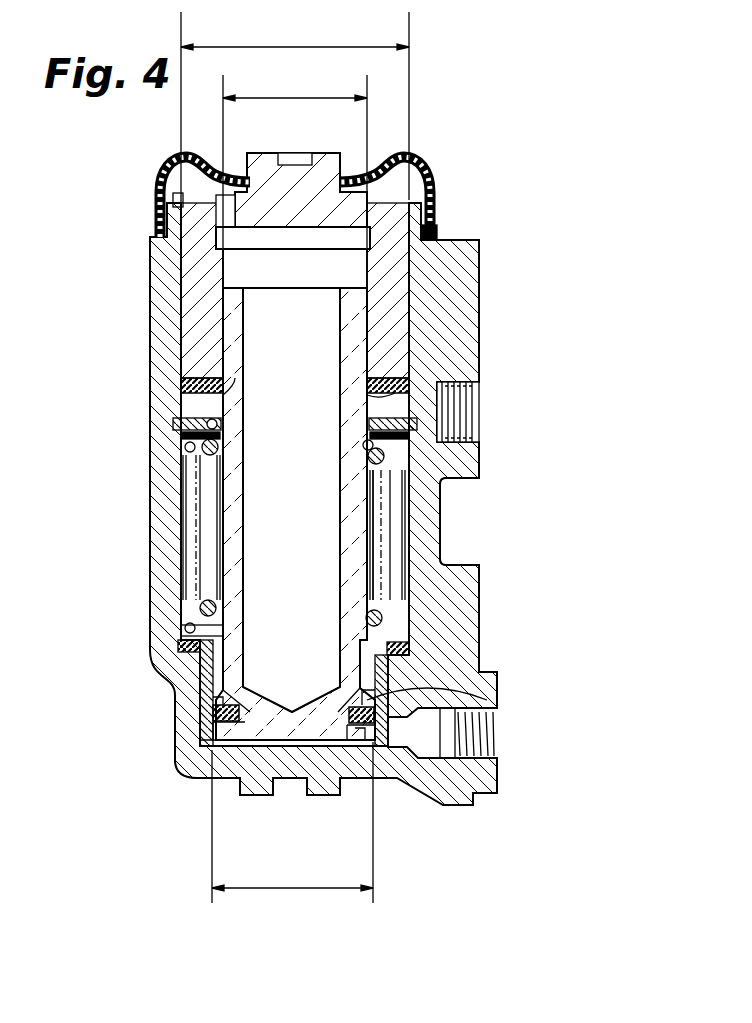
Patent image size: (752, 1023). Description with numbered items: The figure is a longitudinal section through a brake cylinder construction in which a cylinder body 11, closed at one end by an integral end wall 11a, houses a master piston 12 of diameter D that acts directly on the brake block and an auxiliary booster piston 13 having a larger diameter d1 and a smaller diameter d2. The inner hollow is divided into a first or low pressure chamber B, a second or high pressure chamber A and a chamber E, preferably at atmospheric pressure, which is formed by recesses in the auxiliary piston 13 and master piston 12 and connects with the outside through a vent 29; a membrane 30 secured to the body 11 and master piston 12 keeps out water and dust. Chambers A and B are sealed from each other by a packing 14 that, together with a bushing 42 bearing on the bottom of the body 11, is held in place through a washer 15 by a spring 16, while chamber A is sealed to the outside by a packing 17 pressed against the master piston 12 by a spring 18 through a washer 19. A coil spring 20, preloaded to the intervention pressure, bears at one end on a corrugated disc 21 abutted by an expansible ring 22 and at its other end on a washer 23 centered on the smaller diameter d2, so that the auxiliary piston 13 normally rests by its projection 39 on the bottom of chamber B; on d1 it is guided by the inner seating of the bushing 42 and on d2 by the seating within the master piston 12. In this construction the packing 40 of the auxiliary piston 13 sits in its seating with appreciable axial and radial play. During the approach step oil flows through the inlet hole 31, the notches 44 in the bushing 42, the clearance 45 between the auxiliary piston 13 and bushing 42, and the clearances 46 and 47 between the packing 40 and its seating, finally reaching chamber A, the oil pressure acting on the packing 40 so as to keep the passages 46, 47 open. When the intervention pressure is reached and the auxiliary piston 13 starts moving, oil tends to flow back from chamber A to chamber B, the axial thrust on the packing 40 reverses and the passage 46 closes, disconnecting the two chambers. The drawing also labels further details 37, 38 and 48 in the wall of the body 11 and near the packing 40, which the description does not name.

The cylinder body 11 is at (460, 262).
The end wall 11a is at (260, 765).
The master piston 12 is at (392, 297).
The auxiliary booster piston 13 is at (240, 310).
The packing 14 is at (180, 650).
The washer 15 is at (190, 630).
The spring 16 is at (397, 590).
The packing 17 is at (385, 383).
The spring 18 is at (197, 392).
The washer 19 is at (372, 393).
The coil spring 20 is at (197, 480).
The corrugated disc 21 is at (195, 438).
The expansible ring 22 is at (197, 424).
The washer 23 is at (400, 648).
The vent 29 is at (235, 212).
The membrane 30 is at (440, 170).
The inlet hole 31 is at (470, 745).
The bore 37 is at (386, 455).
The threaded bore 38 is at (460, 418).
The projection 39 is at (295, 747).
The packing 40 is at (215, 710).
The bushing 42 is at (200, 668).
The notches 44 is at (365, 707).
The clearance 45 is at (210, 740).
The clearance 46 is at (378, 742).
The clearance 47 is at (372, 735).
The spring 48 is at (215, 698).
The high pressure chamber A is at (387, 522).
The low pressure chamber B is at (238, 748).
The atmospheric chamber E is at (283, 520).
The diameter of master piston D is at (295, 131).
The larger diameter of auxiliary piston d1 is at (292, 822).
The smaller diameter of auxiliary piston d2 is at (295, 161).